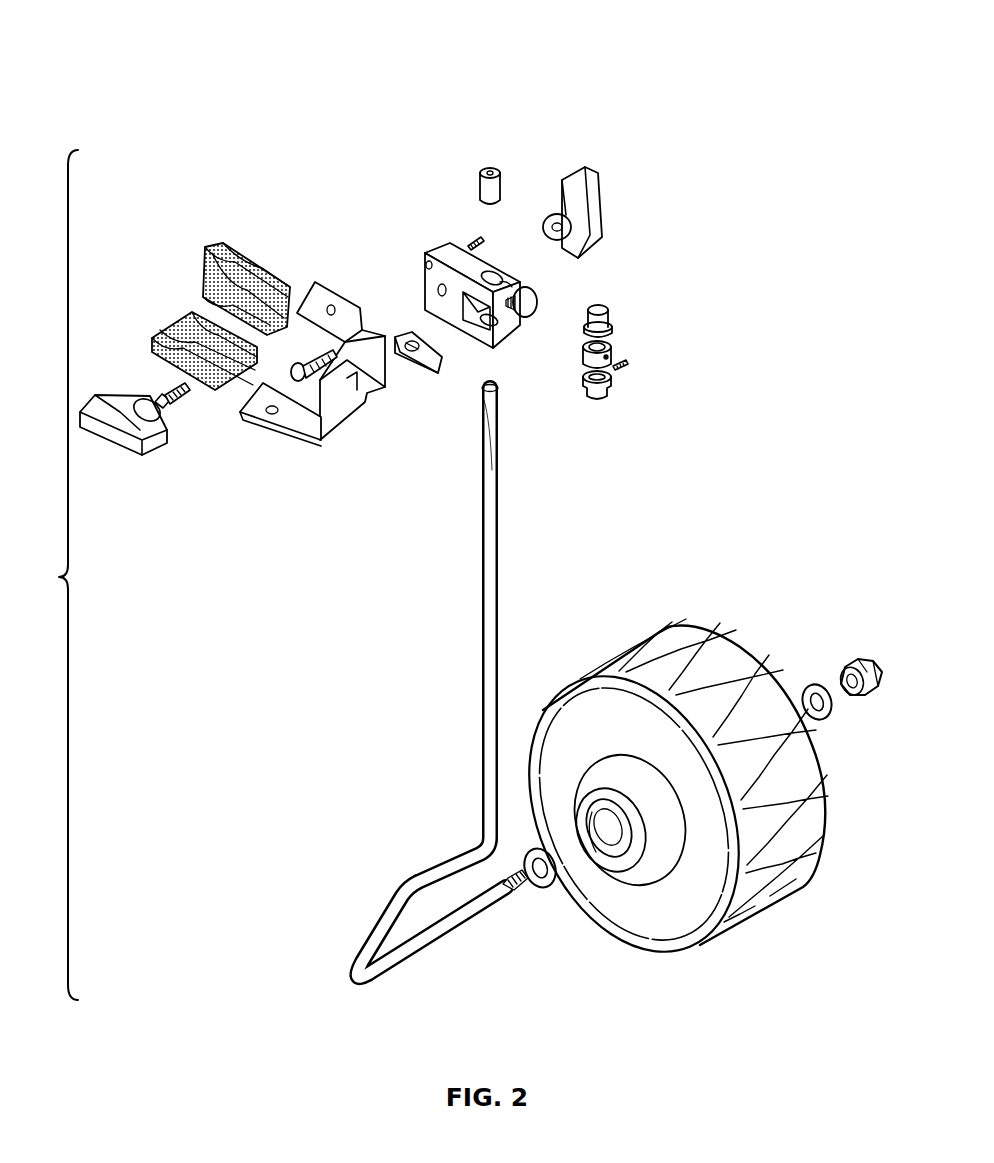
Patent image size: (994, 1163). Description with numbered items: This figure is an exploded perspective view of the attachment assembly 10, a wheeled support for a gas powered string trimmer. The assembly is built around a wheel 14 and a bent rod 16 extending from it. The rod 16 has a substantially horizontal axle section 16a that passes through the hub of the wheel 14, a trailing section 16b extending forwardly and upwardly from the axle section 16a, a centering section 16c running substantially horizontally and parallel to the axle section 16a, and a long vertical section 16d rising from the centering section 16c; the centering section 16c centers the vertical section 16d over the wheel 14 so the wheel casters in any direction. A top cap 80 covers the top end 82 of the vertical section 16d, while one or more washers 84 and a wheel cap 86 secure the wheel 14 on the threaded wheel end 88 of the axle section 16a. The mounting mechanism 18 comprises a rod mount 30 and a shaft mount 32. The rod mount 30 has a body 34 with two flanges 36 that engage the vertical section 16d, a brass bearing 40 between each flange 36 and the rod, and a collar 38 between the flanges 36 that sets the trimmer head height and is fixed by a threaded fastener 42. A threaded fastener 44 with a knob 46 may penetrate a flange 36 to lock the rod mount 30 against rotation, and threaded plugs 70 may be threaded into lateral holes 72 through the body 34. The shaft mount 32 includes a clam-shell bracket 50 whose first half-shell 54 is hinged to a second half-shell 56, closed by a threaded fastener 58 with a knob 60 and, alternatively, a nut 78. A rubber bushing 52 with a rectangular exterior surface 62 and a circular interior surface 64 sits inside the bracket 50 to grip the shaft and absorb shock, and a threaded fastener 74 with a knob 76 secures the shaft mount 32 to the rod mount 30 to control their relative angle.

The attachment assembly 10 is at (838, 118).
The wheel 14 is at (666, 628).
The rod 16 is at (318, 830).
The axle section 16a is at (430, 935).
The trailing section 16b is at (396, 916).
The centering section 16c is at (455, 862).
The vertical section 16d is at (500, 655).
The mounting mechanism 18 is at (318, 152).
The rod mount 30 is at (725, 295).
The shaft mount 32 is at (284, 462).
The body 34 is at (459, 289).
The flanges 36 is at (497, 272).
The collar 38 is at (616, 343).
The brass bearing 40 is at (606, 316).
The threaded fastener 42 is at (630, 364).
The threaded fastener 44 is at (512, 290).
The knob 46 is at (530, 305).
The clam-shell bracket 50 is at (353, 363).
The resilient bushing 52 is at (215, 246).
The first half-shell 54 is at (325, 425).
The second half-shell 56 is at (315, 292).
The threaded fastener 58 is at (180, 403).
The knob 60 is at (115, 445).
The exterior surface 62 is at (290, 286).
The interior surface 64 is at (183, 338).
The threaded plugs 70 is at (469, 242).
The lateral holes 72 is at (425, 265).
The threaded fastener 74 is at (345, 420).
The knob 76 is at (600, 205).
The nut 78 is at (408, 332).
The top cap 80 is at (497, 183).
The top end 82 is at (498, 400).
The washers 84 is at (545, 888).
The wheel cap 86 is at (870, 670).
The wheel end 88 is at (514, 892).